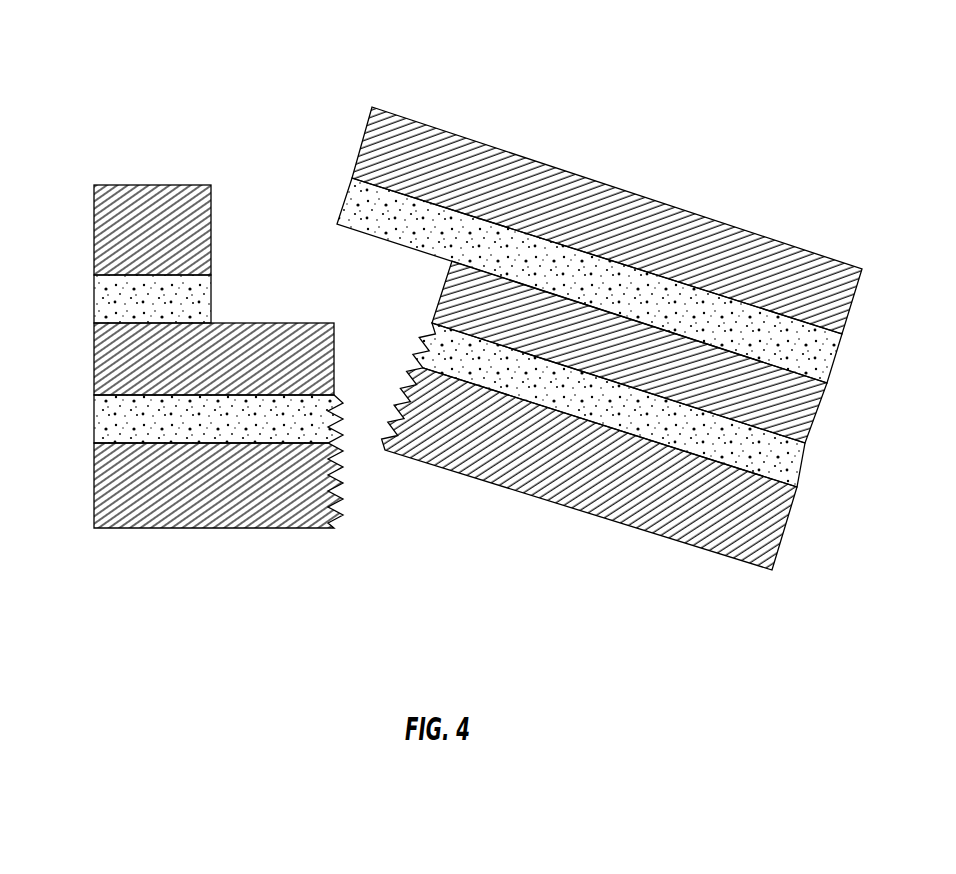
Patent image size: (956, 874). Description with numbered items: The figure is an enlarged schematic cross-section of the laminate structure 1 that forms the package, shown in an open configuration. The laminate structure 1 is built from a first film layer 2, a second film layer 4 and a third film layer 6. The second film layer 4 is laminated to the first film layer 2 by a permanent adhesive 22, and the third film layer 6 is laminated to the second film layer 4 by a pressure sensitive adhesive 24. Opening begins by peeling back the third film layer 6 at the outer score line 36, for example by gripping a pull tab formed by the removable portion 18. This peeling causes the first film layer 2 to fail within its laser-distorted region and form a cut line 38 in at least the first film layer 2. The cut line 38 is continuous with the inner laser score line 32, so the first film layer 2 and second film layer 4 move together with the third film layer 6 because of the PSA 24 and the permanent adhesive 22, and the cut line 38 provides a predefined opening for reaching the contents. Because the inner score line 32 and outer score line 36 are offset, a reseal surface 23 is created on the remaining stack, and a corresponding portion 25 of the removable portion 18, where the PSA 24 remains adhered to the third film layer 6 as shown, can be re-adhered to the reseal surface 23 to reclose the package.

The laminate structure 1 is at (722, 181).
The first film layer 2 is at (92, 505).
The second film layer 4 is at (92, 375).
The third film layer 6 is at (455, 203).
The removable portion 18 is at (556, 160).
The permanent adhesive 22 is at (92, 423).
The reseal surface 23 is at (240, 316).
The pressure sensitive adhesive 24 is at (452, 301).
The corresponding portion 25 is at (360, 240).
The inner laser score line 32 is at (436, 297).
The outer score line 36 is at (352, 152).
The cut line 38 is at (391, 409).